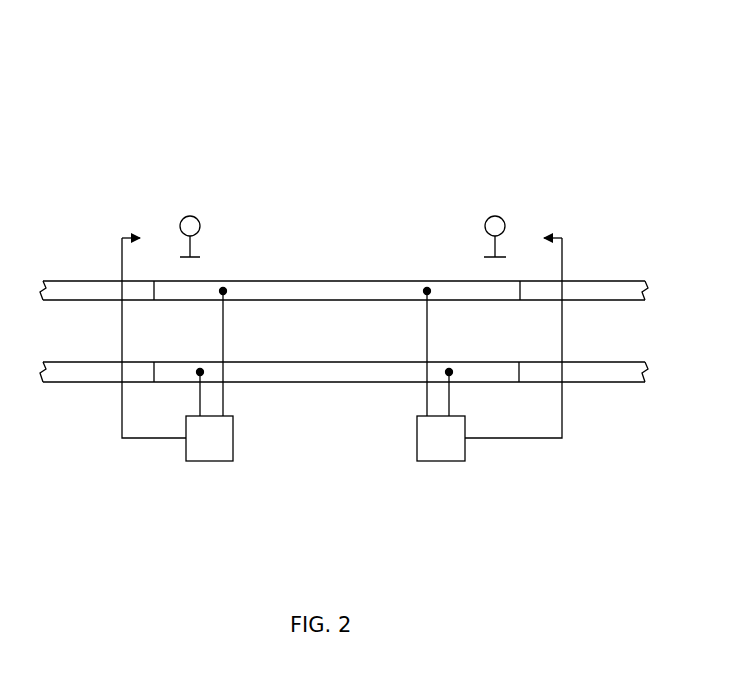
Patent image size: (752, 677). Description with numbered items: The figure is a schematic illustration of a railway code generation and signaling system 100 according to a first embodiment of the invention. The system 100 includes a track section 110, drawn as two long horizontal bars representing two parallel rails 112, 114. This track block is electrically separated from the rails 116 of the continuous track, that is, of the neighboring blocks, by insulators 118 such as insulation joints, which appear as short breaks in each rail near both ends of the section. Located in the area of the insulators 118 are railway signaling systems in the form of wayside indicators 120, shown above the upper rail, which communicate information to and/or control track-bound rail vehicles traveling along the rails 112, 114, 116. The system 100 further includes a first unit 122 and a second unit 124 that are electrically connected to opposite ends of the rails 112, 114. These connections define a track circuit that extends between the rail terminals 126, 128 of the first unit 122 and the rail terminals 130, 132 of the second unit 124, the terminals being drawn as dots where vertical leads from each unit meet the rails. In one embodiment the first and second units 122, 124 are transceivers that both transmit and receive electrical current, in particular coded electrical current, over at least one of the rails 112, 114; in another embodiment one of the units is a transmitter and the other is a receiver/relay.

The railway code generation and signaling system 100 is at (600, 78).
The track section 110 is at (324, 211).
The rail 112 is at (363, 290).
The rail 114 is at (341, 383).
The rails of the continuous track 116 is at (70, 290).
The insulator 118 is at (154, 300).
The wayside indicator 120 is at (190, 215).
The first unit 122 is at (210, 462).
The second unit 124 is at (441, 462).
The rail terminal 126 is at (200, 368).
The rail terminal 128 is at (223, 280).
The rail terminal 130 is at (449, 368).
The rail terminal 132 is at (427, 282).